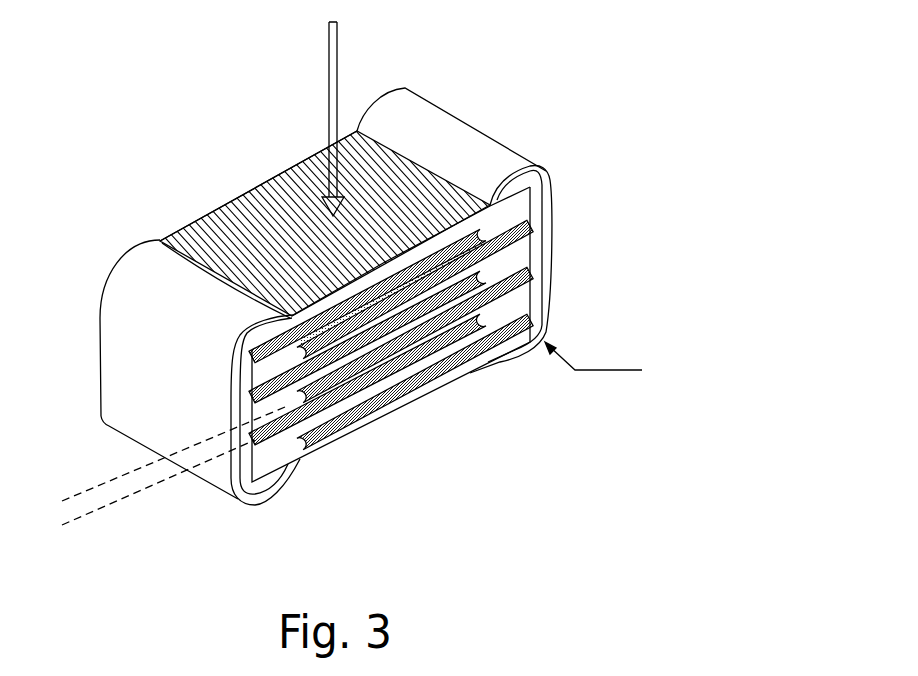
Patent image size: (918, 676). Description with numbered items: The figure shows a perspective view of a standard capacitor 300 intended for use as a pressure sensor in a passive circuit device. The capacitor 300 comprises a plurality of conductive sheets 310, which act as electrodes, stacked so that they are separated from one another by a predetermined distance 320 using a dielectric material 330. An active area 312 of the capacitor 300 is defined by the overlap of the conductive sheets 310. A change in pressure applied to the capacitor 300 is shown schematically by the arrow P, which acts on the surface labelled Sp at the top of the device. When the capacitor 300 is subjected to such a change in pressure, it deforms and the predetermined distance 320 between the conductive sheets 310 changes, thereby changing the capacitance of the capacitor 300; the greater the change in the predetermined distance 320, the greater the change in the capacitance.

The capacitor 300 is at (492, 85).
The conductive sheets 310 is at (516, 240).
The active area 312 is at (362, 318).
The predetermined distance 320 is at (85, 440).
The dielectric material 330 is at (517, 207).
The arrow P is at (342, 119).
The polished surface Sp is at (247, 223).